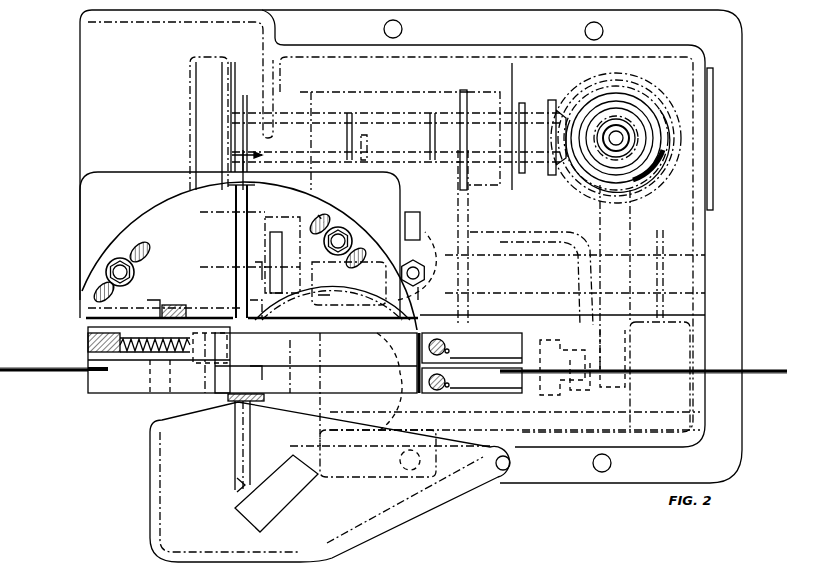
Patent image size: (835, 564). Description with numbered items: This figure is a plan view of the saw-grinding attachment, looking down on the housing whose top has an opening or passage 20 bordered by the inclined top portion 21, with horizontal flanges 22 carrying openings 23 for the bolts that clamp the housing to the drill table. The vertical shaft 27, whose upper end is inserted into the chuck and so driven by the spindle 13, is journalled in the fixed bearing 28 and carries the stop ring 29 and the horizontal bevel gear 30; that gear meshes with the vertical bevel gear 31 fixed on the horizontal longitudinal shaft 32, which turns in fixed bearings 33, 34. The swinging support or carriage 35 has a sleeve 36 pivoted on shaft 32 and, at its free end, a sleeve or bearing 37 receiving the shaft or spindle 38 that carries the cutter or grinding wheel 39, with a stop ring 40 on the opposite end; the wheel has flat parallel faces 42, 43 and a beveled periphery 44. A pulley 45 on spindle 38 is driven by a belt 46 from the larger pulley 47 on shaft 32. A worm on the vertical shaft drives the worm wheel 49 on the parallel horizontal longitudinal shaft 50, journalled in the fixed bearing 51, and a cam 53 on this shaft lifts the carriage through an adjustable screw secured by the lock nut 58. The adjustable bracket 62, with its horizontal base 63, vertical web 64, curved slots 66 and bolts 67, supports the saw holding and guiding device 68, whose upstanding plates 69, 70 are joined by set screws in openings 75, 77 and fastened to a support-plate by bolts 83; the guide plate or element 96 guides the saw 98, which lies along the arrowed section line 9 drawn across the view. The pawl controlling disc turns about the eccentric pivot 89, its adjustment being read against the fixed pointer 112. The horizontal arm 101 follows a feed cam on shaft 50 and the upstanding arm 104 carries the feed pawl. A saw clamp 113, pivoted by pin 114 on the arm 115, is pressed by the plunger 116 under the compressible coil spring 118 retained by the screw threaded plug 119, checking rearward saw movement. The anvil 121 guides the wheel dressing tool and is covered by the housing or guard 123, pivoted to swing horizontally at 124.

The thread 9 is at (22, 372).
The vertical spindle 13 is at (247, 418).
The opening or passage 20 is at (236, 252).
The inclined top portion 21 is at (585, 437).
The horizontal flanges 22 is at (588, 470).
The openings 23 is at (601, 472).
The vertical shaft 27 is at (630, 132).
The fixed bearing 28 is at (632, 68).
The stop ring 29 is at (620, 142).
The horizontal bevel gear 30 is at (655, 122).
The vertical bevel gear 31 is at (550, 100).
The horizontal longitudinal shaft 32 is at (400, 130).
The fixed bearing 33 is at (244, 100).
The fixed bearing 34 is at (463, 90).
The swinging support or carriage 35 is at (463, 218).
The sleeve 36 is at (364, 92).
The sleeve or bearing 37 is at (500, 402).
The shaft or spindle 38 is at (572, 392).
The cutter or grinding wheel 39 is at (245, 425).
The stop ring 40 is at (542, 346).
The flat face 42 is at (246, 441).
The flat face 43 is at (250, 455).
The periphery 44 is at (240, 480).
The pulley 45 is at (192, 370).
The belt 46 is at (205, 130).
The pulley 47 is at (190, 108).
The worm wheel 49 is at (612, 357).
The horizontal longitudinal shaft 50 is at (700, 270).
The fixed bearing 51 is at (430, 235).
The cam 53 is at (412, 212).
The lock nut 58 is at (420, 260).
The adjustable bracket 62 is at (320, 212).
The horizontal base 63 is at (171, 218).
The vertical web 64 is at (150, 318).
The circularly curved slots 66 is at (136, 246).
The bolts 67 is at (118, 266).
The saw holding and guiding device 68 is at (310, 443).
The upstanding plate 69 is at (114, 393).
The upstanding plate 70 is at (150, 355).
The openings 75 is at (452, 360).
The openings 77 is at (450, 350).
The bolts 83 is at (452, 383).
The eccentric pivot 89 is at (335, 366).
The guide plate or element 96 is at (310, 360).
The saw 98 is at (72, 373).
The horizontal arm 101 is at (332, 291).
The upstanding arm 104 is at (248, 236).
The fixed pointer 112 is at (376, 381).
The saw clamp 113 is at (263, 366).
The pin 114 is at (236, 297).
The arm 115 is at (240, 284).
The plunger 116 is at (230, 314).
The compressible coil spring 118 is at (90, 335).
The screw threaded plug 119 is at (100, 345).
The anvil 121 is at (275, 487).
The housing or guard 123 is at (421, 483).
The pivot 124 is at (503, 471).